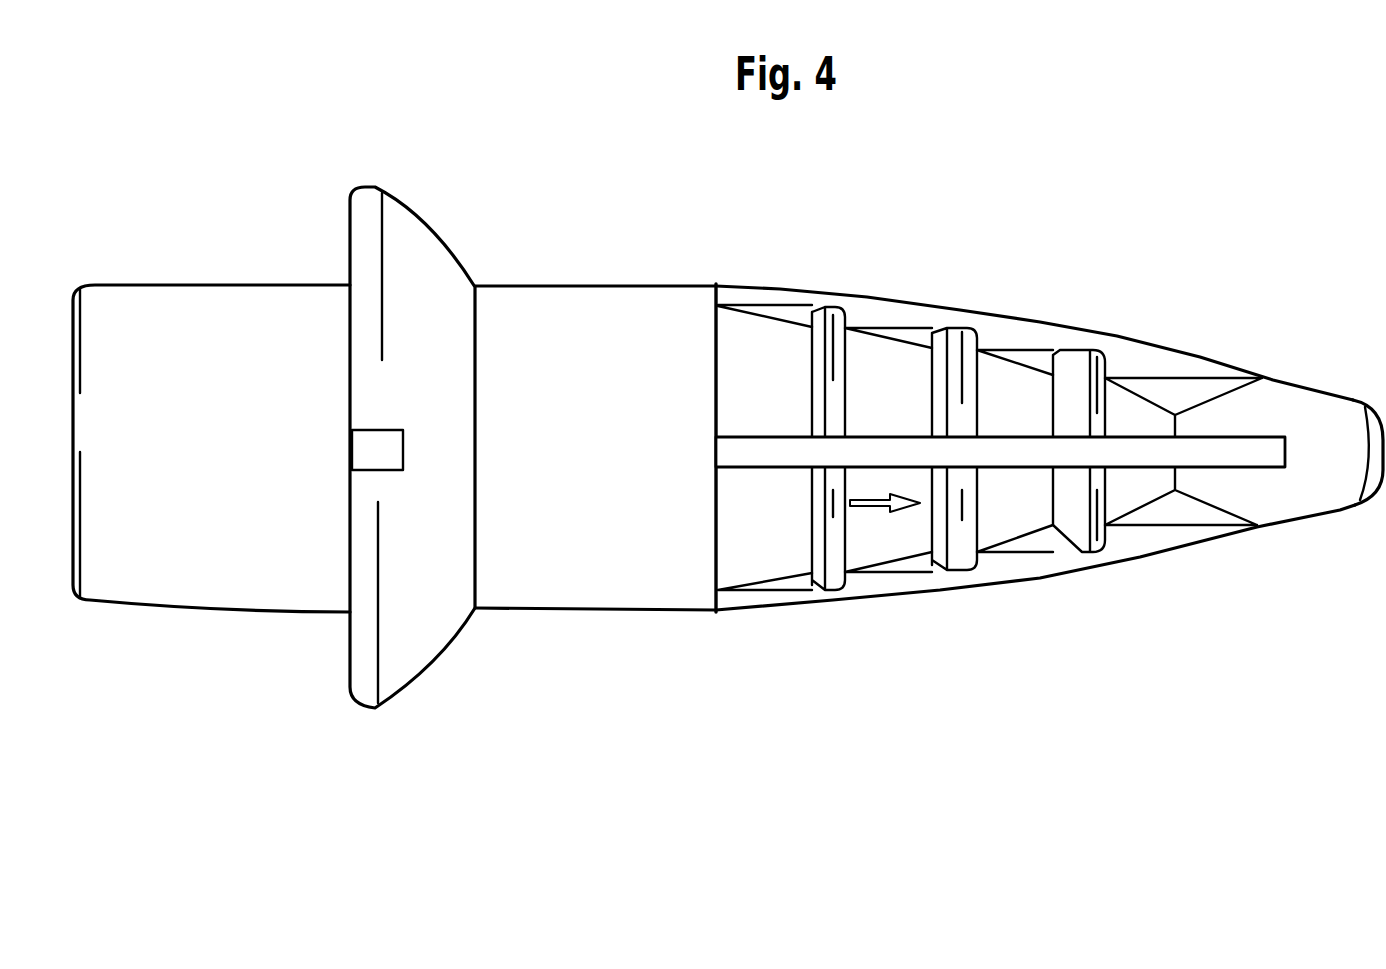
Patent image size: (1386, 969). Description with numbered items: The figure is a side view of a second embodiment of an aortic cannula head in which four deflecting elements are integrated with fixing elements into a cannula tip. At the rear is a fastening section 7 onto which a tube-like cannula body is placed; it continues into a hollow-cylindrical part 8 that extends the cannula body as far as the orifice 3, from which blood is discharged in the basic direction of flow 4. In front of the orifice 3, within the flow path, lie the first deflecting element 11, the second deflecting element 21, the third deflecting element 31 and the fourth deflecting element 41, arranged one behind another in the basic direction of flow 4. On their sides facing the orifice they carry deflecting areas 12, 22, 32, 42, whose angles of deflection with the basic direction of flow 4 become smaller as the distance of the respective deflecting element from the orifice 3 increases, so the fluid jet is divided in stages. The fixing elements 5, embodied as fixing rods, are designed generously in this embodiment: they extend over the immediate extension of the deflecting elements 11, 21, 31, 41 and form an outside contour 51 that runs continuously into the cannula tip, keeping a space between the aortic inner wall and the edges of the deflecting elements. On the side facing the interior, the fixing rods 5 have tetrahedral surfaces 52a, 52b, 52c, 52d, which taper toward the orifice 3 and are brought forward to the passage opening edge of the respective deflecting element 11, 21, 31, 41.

The orifice 3 is at (718, 388).
The basic direction of flow 4 is at (885, 520).
The fixing elements 5 is at (1049, 445).
The fastening section 7 is at (198, 303).
The hollow-cylindrical part 8 is at (576, 302).
The first deflecting element 11 is at (835, 398).
The deflecting area 12 is at (815, 355).
The second deflecting element 21 is at (967, 412).
The deflecting area 22 is at (945, 378).
The third deflecting element 31 is at (1100, 413).
The deflecting area 32 is at (1072, 385).
The fourth deflecting element 41 is at (1292, 412).
The deflecting area 42 is at (1218, 423).
The outside contour 51 is at (1117, 335).
The tetrahedral surface 52a is at (810, 580).
The tetrahedral surface 52b is at (915, 565).
The tetrahedral surface 52c is at (1037, 542).
The tetrahedral surface 52d is at (1178, 507).